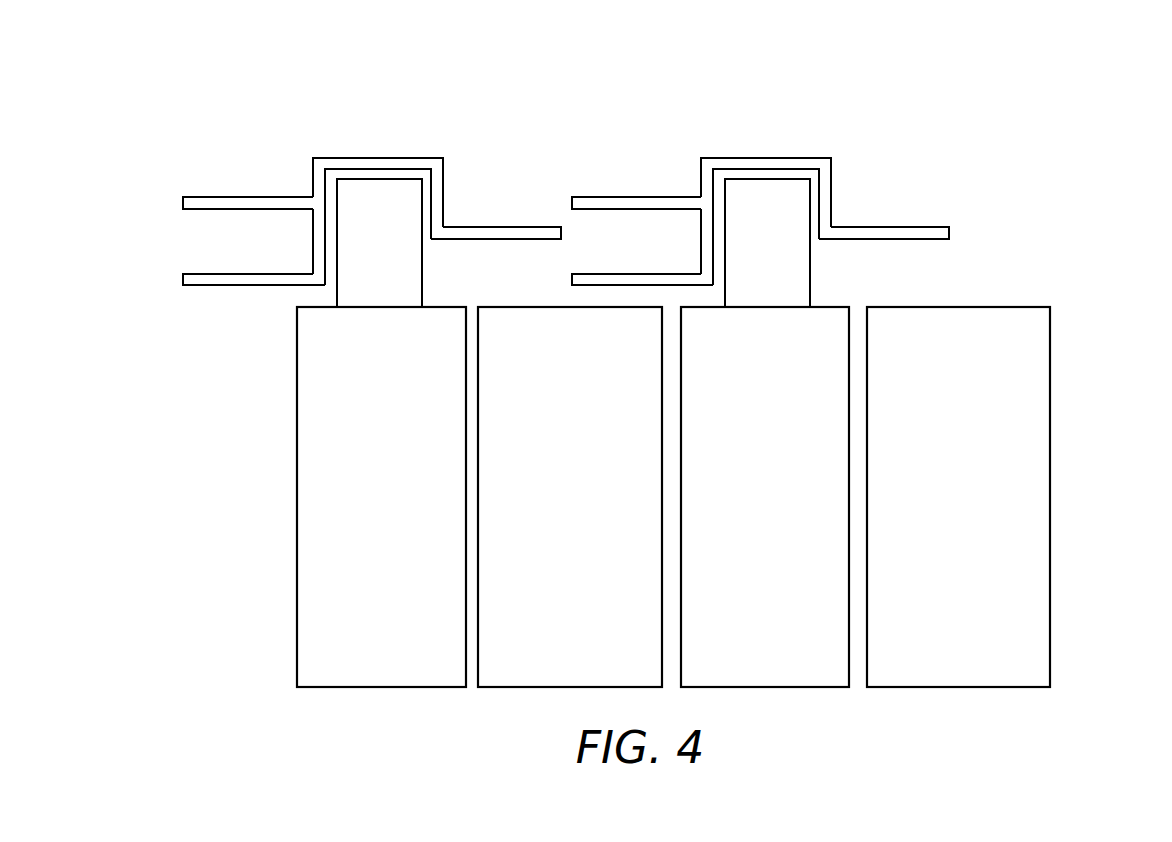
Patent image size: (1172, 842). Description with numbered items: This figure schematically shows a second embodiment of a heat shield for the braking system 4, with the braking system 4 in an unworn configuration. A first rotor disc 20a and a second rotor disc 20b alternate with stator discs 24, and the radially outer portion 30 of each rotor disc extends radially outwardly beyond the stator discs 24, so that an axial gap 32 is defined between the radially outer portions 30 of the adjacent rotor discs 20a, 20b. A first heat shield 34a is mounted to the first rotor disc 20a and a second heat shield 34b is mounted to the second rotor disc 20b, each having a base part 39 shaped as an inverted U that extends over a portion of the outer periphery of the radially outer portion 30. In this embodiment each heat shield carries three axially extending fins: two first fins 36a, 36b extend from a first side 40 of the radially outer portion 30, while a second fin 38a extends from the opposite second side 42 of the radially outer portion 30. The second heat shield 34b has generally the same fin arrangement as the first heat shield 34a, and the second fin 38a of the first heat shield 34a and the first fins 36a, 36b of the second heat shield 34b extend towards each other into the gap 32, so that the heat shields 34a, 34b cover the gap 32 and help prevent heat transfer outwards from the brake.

The braking system 4 is at (1080, 230).
The axial gap 32 is at (590, 83).
The first rotor disc 20a is at (362, 506).
The second rotor disc 20b is at (745, 506).
The stator disc 24 is at (558, 506).
The radially outer portion 30 is at (366, 254).
The first heat shield 34a is at (346, 158).
The second heat shield 34b is at (734, 158).
The first fin 36a is at (210, 274).
The first fin 36b is at (210, 197).
The second fin 38a is at (532, 227).
The base part 39 is at (408, 158).
The first side 40 is at (337, 192).
The second side 42 is at (422, 275).